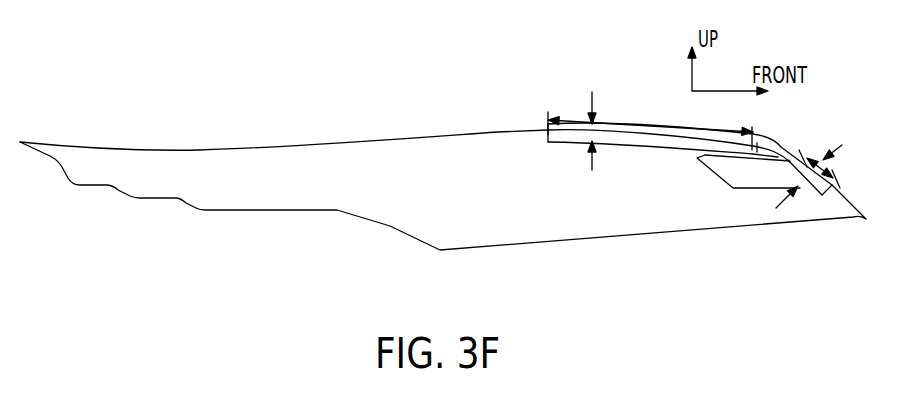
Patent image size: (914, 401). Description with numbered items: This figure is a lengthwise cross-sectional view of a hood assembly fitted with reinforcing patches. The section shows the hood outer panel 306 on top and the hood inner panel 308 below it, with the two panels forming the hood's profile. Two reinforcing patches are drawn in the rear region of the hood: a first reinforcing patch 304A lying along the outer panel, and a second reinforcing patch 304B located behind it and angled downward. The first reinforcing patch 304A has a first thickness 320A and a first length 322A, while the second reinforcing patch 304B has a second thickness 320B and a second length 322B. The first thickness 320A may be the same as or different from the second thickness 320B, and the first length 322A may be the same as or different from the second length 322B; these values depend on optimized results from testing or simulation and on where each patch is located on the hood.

The hood outer panel 306 is at (502, 132).
The hood inner panel 308 is at (648, 226).
The first reinforcing patch 304A is at (628, 138).
The first thickness 320A is at (592, 170).
The first length 322A is at (645, 122).
The second reinforcing patch 304B is at (767, 178).
The second thickness 320B is at (787, 200).
The second length 322B is at (815, 152).